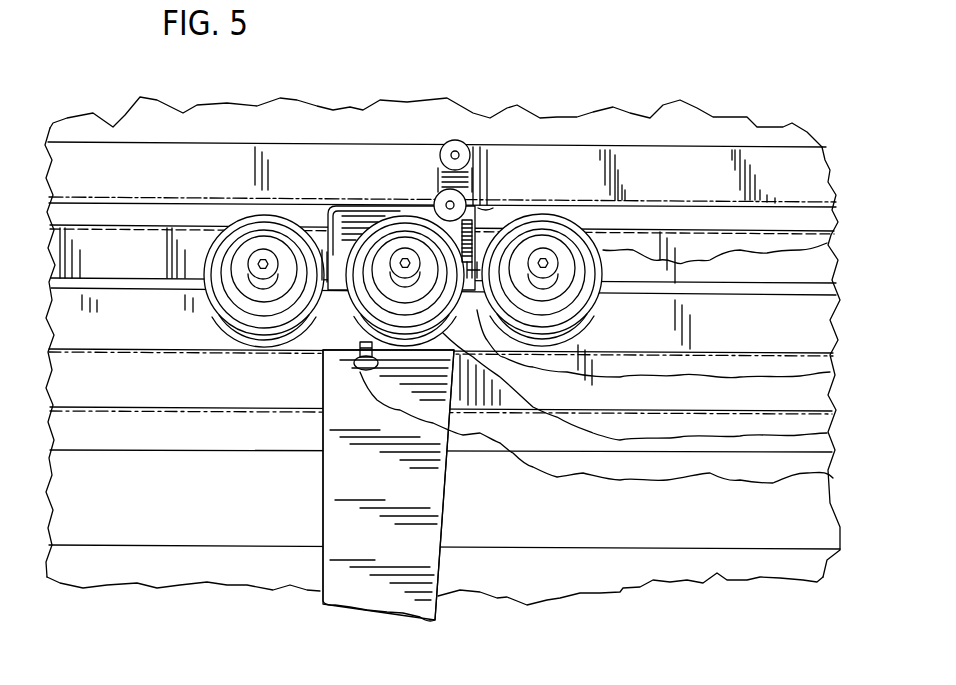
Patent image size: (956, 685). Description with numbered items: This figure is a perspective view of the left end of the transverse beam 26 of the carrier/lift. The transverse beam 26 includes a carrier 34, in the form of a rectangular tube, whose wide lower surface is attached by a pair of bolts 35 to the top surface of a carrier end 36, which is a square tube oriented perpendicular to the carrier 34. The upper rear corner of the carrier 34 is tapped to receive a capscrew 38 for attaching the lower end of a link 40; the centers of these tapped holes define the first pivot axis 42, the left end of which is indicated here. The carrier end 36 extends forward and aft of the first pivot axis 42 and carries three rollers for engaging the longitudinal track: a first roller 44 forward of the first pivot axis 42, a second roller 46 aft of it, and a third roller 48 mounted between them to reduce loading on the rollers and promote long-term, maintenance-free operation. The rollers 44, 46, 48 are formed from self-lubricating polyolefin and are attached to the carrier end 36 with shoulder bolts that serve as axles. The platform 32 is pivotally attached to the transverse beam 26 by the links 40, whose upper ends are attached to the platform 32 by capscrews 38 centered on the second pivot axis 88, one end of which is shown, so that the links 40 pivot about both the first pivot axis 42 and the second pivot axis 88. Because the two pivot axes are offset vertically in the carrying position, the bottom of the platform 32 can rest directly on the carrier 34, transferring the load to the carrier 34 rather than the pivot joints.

The transverse beam 26 is at (403, 603).
The platform 32 is at (442, 351).
The carrier 34 is at (363, 206).
The bolts 35 is at (857, 467).
The carrier end 36 is at (830, 372).
The capscrew 38 is at (433, 206).
The link 40 is at (473, 212).
The first pivot axis 42 is at (487, 210).
The first roller 44 is at (305, 205).
The second roller 46 is at (827, 243).
The third roller 48 is at (827, 433).
The second pivot axis 88 is at (467, 150).